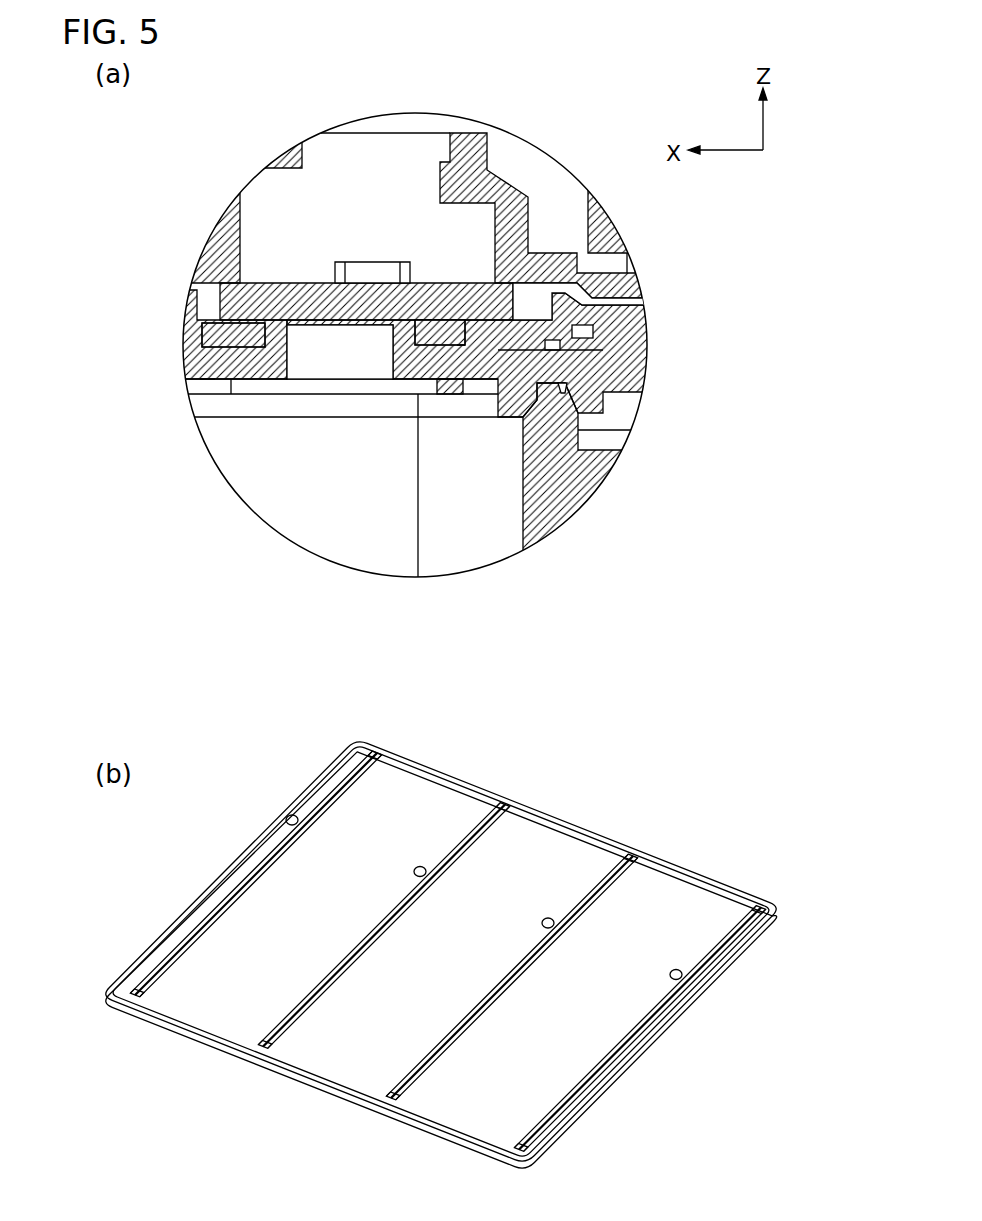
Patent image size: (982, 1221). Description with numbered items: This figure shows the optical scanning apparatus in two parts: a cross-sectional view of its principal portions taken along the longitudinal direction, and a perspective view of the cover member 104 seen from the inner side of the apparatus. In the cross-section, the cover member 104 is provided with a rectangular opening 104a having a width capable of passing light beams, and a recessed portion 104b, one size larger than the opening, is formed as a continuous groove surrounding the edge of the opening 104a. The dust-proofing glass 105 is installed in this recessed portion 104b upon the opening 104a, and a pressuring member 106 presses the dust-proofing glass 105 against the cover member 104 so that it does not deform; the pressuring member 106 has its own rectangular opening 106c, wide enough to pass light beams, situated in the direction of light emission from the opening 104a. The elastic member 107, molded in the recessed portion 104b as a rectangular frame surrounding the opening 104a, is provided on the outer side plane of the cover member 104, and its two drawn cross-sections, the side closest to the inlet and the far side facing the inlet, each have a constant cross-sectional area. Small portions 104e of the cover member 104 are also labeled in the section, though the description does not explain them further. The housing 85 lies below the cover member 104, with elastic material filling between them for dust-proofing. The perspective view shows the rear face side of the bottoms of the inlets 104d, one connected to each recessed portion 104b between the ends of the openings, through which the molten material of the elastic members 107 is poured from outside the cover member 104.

The cover member 104 is at (650, 364).
The opening 104a is at (338, 368).
The recessed portion 104b is at (533, 305).
The inlet 104d is at (292, 815).
The hook portion 104e is at (208, 377).
The dust-proofing glass 105 is at (313, 300).
The pressuring member 106 is at (445, 183).
The opening 106c is at (410, 148).
The elastic member 107 is at (278, 868).
The housing 85 is at (572, 487).